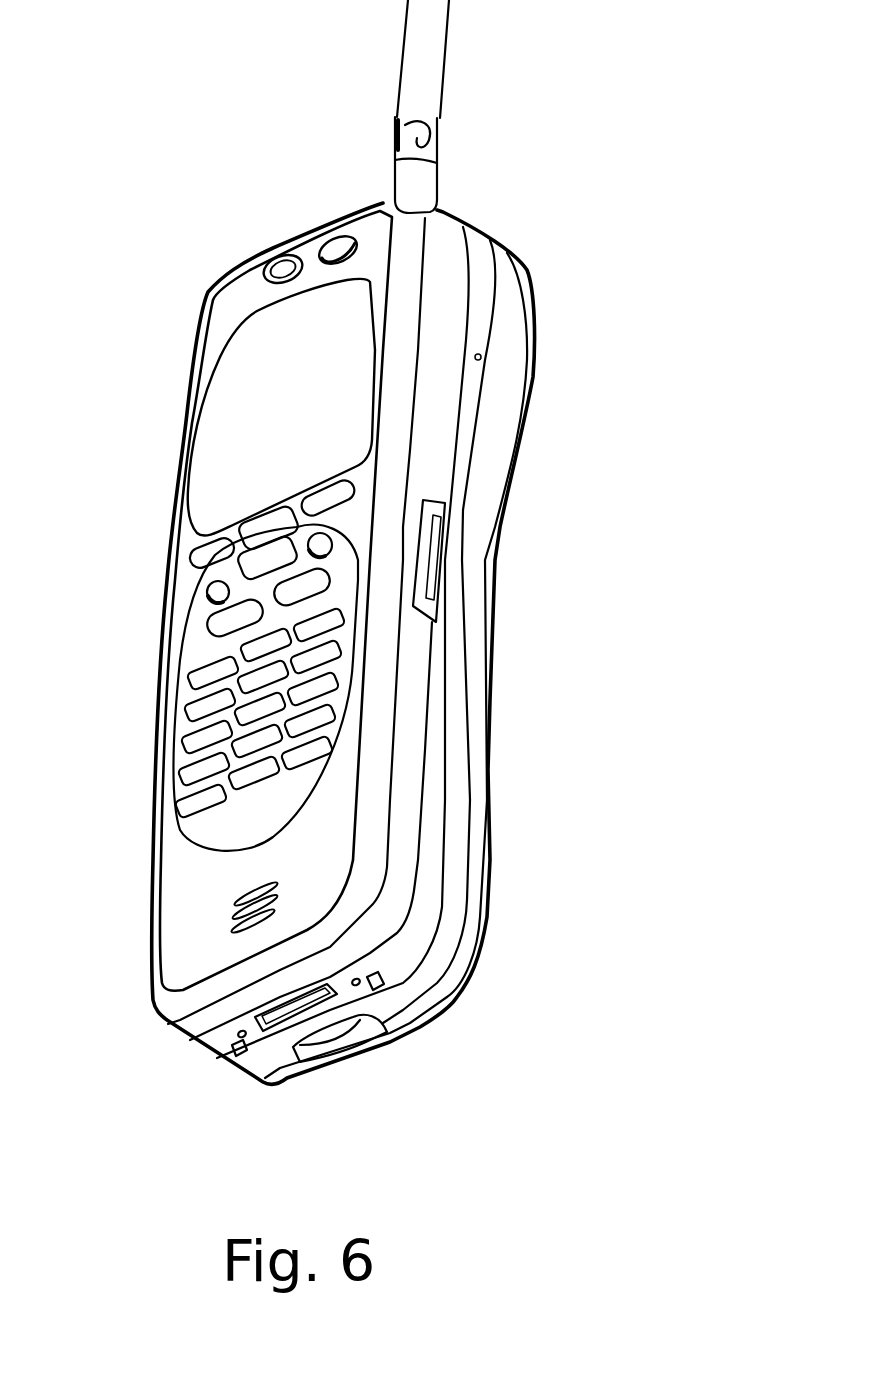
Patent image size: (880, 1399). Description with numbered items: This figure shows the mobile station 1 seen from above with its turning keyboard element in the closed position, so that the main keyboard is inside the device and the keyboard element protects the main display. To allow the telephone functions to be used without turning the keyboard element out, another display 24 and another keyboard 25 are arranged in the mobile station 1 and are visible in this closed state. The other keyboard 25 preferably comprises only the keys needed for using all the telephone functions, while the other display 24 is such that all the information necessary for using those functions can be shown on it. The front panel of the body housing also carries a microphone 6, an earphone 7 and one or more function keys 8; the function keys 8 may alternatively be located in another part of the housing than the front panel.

The mobile station 1 is at (580, 580).
The microphone 6 is at (232, 903).
The earphone 7 is at (277, 265).
The function keys 8 is at (338, 250).
The other display 24 is at (223, 430).
The other keyboard 25 is at (212, 714).